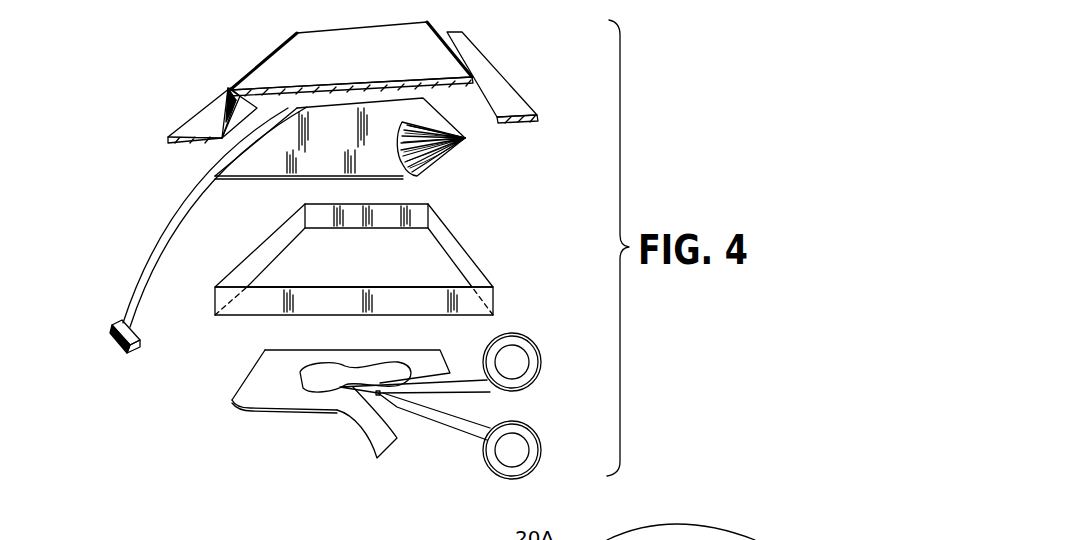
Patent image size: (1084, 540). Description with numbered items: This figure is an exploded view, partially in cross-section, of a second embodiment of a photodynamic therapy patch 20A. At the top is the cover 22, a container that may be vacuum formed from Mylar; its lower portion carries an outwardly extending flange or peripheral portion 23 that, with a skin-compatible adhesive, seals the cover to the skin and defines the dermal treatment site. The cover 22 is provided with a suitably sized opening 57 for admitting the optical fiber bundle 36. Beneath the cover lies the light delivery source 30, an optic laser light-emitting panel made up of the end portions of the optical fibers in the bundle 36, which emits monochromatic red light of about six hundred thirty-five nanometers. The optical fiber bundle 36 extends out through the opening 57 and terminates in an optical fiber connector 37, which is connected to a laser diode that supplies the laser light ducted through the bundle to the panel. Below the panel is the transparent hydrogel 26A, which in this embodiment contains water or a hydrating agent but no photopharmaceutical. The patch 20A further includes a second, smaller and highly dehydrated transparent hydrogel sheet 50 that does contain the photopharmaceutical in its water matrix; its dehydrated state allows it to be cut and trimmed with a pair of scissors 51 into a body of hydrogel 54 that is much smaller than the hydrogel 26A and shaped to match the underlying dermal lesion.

The patch 20A is at (150, 192).
The cover 22 is at (322, 38).
The flange or peripheral portion 23 is at (527, 122).
The opening 57 is at (228, 88).
The light delivery source 30 is at (451, 155).
The optical fiber bundle 36 is at (155, 246).
The optical fiber connector 37 is at (136, 352).
The transparent hydrogel 26A is at (467, 250).
The second layer or sheet of transparent hydrogel 50 is at (244, 384).
The body of hydrogel 54 is at (387, 362).
The pair of scissors 51 is at (447, 420).